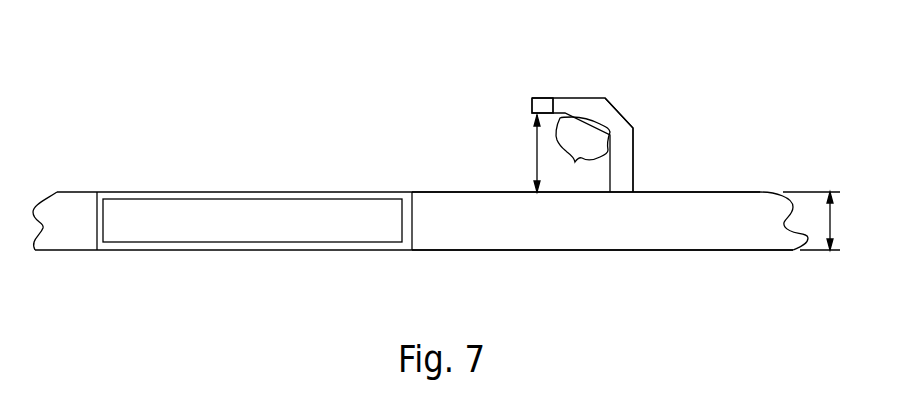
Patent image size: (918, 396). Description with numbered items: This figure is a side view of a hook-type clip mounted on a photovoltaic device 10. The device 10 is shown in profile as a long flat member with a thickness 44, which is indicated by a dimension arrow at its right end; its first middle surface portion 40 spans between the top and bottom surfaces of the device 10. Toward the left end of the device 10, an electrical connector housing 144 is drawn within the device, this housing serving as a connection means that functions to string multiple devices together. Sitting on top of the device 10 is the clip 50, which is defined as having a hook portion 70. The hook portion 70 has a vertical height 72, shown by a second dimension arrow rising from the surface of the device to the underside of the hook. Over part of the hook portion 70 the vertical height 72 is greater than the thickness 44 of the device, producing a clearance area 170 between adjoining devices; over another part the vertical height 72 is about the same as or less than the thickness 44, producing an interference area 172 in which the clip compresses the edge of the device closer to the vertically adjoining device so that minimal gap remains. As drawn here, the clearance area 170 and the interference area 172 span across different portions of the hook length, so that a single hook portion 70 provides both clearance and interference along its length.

The photovoltaic device 10 is at (737, 192).
The first middle surface portion 40 is at (688, 238).
The thickness 44 is at (832, 222).
The clip 50 is at (635, 155).
The hook portion 70 is at (583, 108).
The vertical height 72 is at (535, 152).
The electrical connector housing 144 is at (261, 235).
The clearance area 170 is at (532, 113).
The interference area 172 is at (580, 155).